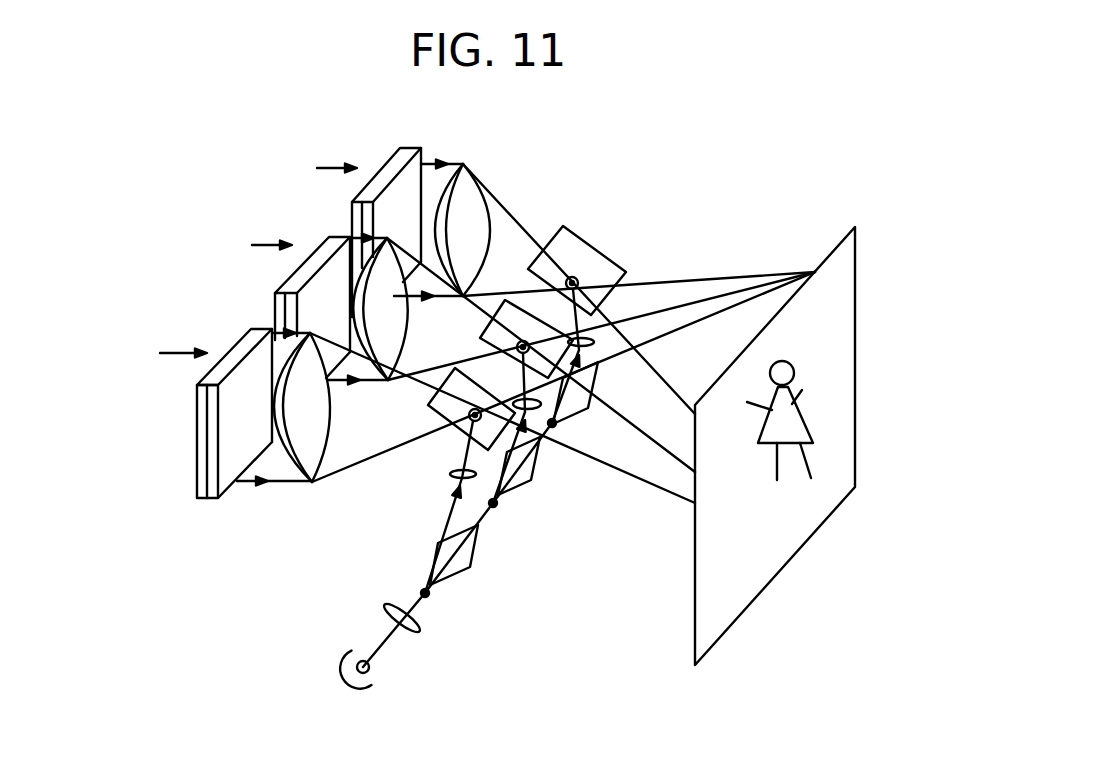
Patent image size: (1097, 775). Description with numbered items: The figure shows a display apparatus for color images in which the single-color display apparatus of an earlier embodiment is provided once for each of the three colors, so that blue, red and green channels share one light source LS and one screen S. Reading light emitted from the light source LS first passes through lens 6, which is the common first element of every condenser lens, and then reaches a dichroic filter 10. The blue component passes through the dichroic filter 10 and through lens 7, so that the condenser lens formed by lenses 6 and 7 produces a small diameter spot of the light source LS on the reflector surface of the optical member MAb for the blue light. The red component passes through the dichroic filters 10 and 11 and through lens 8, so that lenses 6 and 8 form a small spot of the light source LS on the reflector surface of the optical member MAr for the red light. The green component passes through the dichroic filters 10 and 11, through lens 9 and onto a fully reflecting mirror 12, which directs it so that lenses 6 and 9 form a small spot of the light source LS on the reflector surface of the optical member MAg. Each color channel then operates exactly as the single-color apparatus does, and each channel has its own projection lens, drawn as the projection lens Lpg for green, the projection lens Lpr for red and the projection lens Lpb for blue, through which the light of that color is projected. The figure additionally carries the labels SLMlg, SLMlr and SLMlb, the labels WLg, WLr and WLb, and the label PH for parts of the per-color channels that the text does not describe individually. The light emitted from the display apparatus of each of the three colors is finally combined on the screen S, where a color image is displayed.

The lens 6 is at (421, 629).
The lens 7 is at (473, 478).
The lens 8 is at (538, 411).
The lens 9 is at (594, 340).
The dichroic filter 10 is at (470, 553).
The dichroic filter 11 is at (536, 464).
The fully reflecting mirror 12 is at (584, 398).
The light source LS is at (375, 683).
The screen S is at (857, 277).
The pinhole PH is at (578, 277).
The optical member MAg is at (610, 270).
The optical member MAr is at (488, 334).
The optical member MAb is at (456, 433).
The projection lens Lpg is at (468, 168).
The projection lens Lpr is at (372, 385).
The projection lens Lpb is at (310, 465).
The spatial light modulator (green) SLMlg is at (383, 158).
The spatial light modulator (red) SLMlr is at (308, 236).
The spatial light modulator (blue) SLMlb is at (226, 330).
The write light (green) WLg is at (303, 171).
The write light (red) WLr is at (237, 248).
The write light (blue) WLb is at (147, 357).